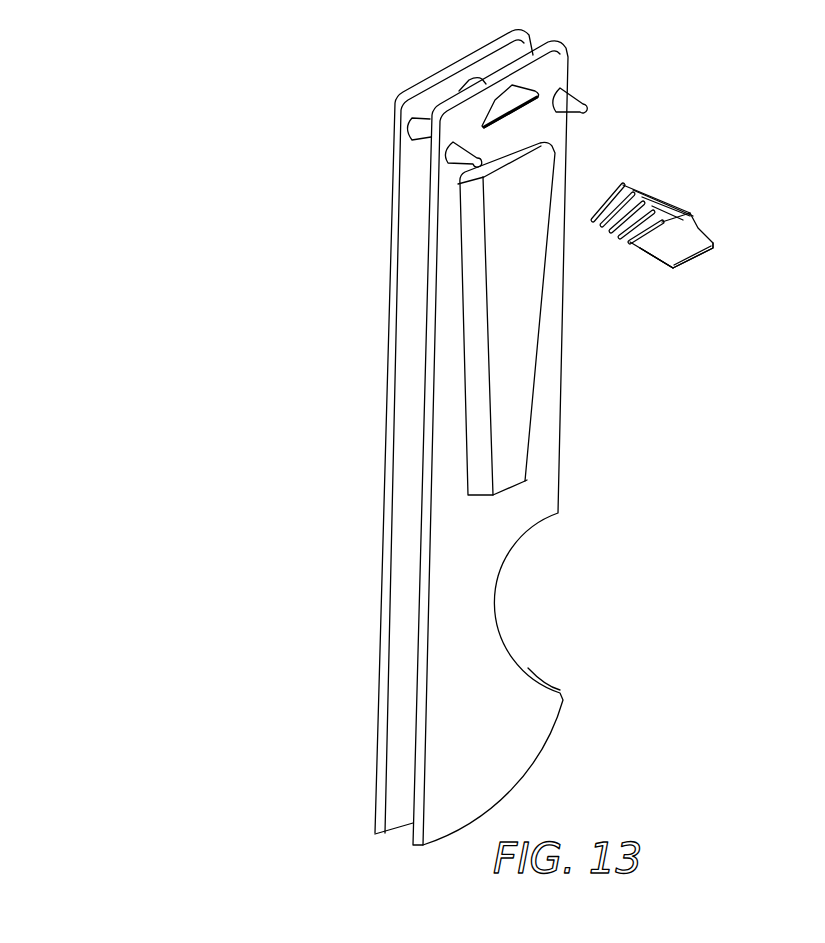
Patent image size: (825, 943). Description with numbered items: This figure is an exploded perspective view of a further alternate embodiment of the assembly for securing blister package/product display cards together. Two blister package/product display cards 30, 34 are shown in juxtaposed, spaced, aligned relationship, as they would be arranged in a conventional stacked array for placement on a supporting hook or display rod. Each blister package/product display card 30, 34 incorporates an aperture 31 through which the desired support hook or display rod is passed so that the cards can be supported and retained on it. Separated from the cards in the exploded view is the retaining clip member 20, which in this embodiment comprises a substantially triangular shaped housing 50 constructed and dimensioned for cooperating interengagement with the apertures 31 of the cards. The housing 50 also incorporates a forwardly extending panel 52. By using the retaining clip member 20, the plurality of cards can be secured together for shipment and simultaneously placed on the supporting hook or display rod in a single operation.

The retaining clip member 20 is at (714, 216).
The blister package/product display card 30 is at (523, 722).
The aperture 31 is at (507, 88).
The blister package/product display card 34 is at (382, 623).
The triangular shaped housing 50 is at (714, 257).
The forwardly extending panel 52 is at (673, 260).